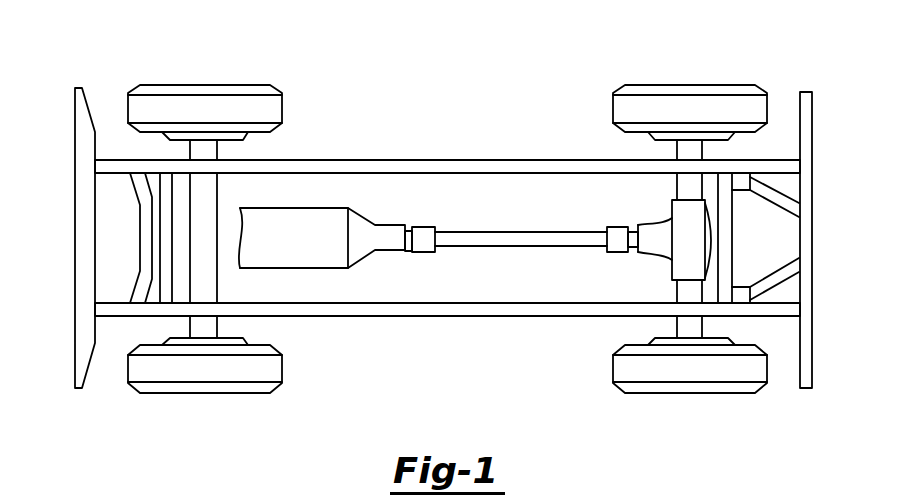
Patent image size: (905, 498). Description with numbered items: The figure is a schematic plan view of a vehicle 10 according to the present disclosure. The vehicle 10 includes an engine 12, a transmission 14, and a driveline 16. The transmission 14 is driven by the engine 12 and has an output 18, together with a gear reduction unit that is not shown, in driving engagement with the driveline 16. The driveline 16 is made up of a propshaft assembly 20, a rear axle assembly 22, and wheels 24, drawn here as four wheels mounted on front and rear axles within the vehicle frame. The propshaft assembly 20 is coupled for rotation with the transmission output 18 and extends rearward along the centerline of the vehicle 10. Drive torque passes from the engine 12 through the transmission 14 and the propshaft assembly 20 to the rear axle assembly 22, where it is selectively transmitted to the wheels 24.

The vehicle 10 is at (397, 100).
The engine 12 is at (305, 251).
The transmission 14 is at (388, 233).
The driveline 16 is at (628, 221).
The output 18 is at (408, 247).
The propshaft assembly 20 is at (498, 236).
The rear axle assembly 22 is at (664, 267).
The wheels 24 is at (203, 85).